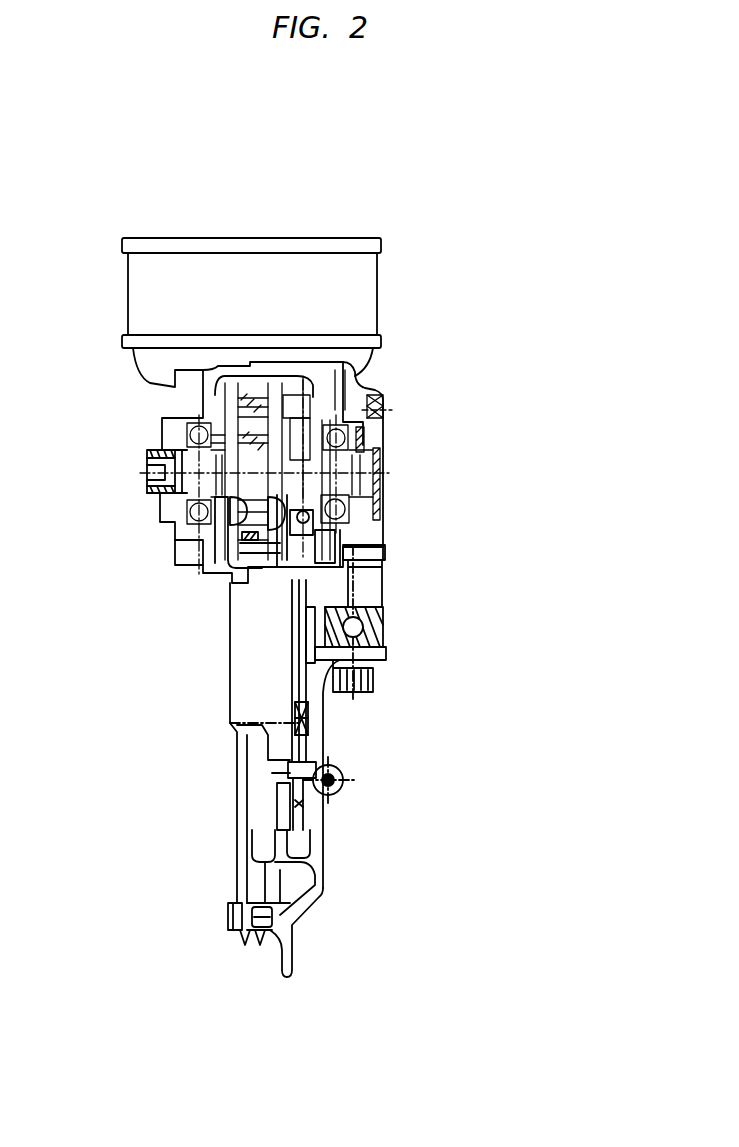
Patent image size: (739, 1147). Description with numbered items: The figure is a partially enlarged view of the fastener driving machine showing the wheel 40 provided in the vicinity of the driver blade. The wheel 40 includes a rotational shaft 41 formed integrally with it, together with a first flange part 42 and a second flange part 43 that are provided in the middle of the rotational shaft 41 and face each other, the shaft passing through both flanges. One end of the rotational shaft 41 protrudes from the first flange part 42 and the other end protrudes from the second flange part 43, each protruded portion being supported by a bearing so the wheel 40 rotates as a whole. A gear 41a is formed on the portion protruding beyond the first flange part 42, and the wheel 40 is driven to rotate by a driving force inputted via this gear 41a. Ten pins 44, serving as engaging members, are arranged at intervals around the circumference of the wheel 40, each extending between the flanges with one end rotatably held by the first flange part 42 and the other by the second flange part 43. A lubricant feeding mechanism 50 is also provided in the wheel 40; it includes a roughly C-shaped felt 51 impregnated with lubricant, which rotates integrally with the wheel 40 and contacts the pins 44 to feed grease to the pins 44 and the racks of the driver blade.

The wheel 40 is at (302, 380).
The rotational shaft 41 is at (384, 475).
The gear 41a is at (158, 503).
The first flange part 42 is at (229, 574).
The second flange part 43 is at (385, 630).
The pins 44 is at (257, 575).
The lubricant feeding mechanism 50 is at (478, 622).
The felt 51 is at (383, 547).